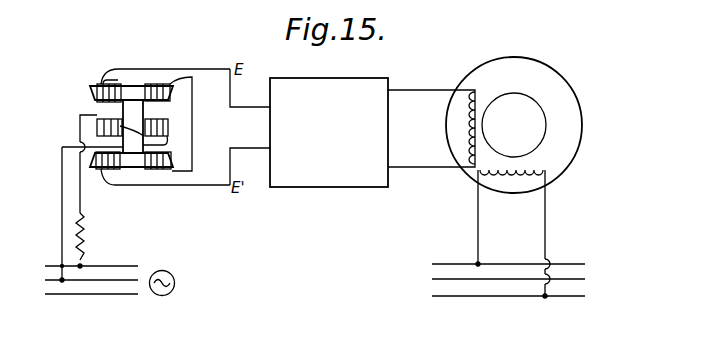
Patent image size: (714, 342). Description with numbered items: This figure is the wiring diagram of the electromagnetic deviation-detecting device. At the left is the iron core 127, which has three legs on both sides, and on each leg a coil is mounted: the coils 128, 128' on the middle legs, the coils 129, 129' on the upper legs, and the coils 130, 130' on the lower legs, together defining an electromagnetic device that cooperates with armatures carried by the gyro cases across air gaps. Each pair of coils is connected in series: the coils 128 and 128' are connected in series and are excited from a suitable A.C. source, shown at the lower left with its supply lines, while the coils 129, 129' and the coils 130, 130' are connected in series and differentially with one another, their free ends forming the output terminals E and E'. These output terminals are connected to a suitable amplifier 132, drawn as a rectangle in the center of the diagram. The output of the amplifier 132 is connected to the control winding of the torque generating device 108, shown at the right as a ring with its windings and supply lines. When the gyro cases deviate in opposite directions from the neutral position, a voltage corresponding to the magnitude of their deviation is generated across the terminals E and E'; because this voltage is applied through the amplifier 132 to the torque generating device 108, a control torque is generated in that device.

The iron core 127 is at (95, 85).
The coil 128 is at (92, 127).
The coil 128' is at (187, 132).
The coil 129 is at (89, 95).
The coil 129' is at (165, 73).
The coil 130 is at (106, 181).
The coil 130' is at (160, 183).
The amplifier 132 is at (329, 132).
The torque generating device 108 is at (577, 122).